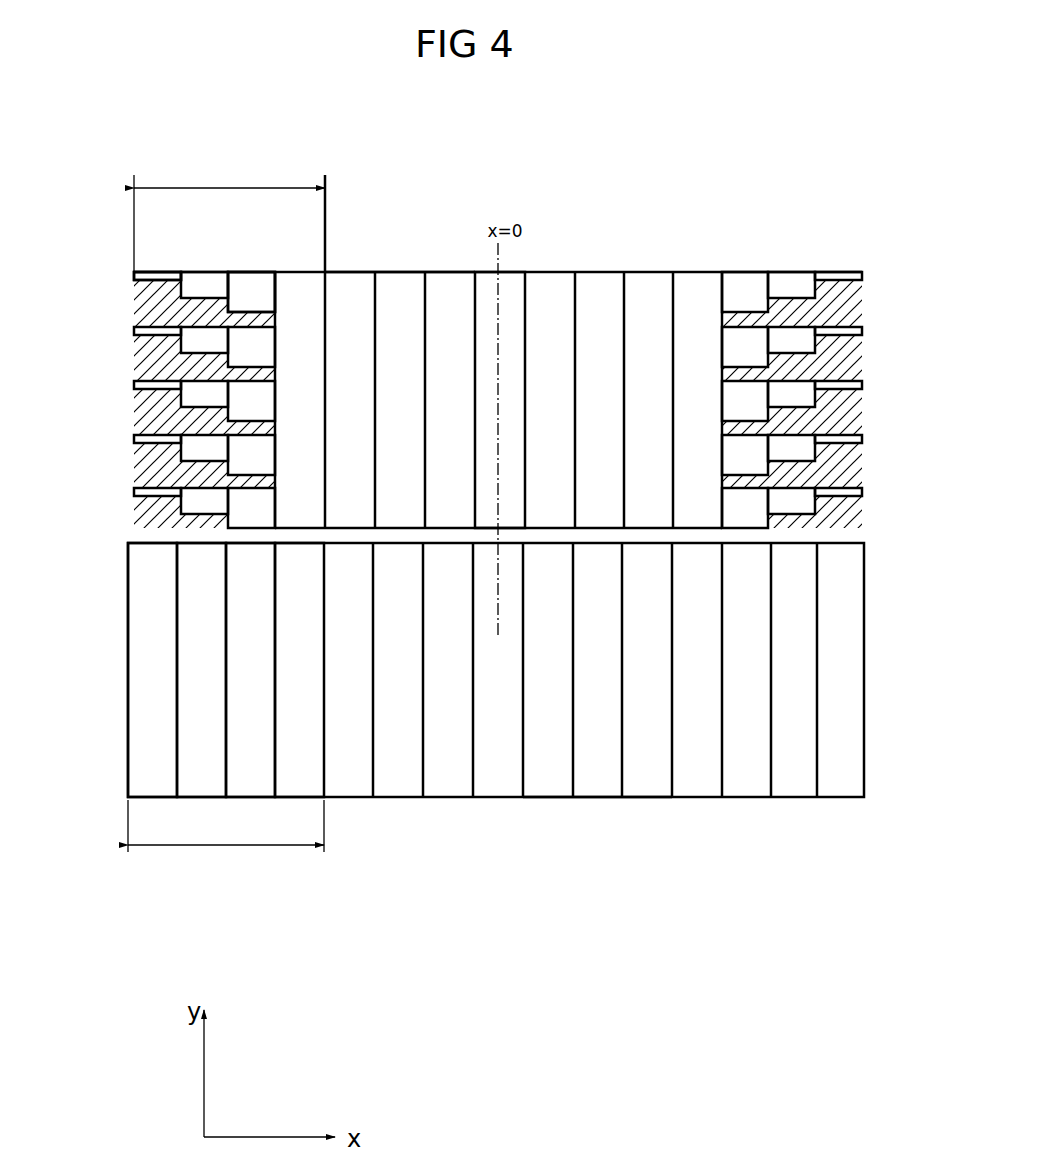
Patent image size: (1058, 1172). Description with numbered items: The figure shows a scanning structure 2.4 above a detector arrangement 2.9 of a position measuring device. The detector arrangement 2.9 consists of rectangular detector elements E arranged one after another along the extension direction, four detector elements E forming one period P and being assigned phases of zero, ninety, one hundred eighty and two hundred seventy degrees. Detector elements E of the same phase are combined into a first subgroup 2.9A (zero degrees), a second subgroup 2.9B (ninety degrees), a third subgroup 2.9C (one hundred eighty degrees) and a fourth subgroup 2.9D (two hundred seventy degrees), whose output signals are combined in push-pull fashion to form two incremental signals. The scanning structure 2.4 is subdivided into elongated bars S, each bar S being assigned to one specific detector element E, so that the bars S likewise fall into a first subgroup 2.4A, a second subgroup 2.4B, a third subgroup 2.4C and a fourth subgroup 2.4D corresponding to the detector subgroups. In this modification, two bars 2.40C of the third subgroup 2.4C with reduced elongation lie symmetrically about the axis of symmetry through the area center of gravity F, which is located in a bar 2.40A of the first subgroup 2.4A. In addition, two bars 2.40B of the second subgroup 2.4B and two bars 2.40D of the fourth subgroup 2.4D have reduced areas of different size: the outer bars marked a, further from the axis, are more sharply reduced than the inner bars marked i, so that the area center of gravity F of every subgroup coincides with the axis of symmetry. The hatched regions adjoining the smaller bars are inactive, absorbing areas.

The scanning structure 2.4 is at (487, 346).
The first subgroup of bars 2.4A is at (487, 265).
The second subgroup of bars 2.4B is at (140, 385).
The third subgroup of bars 2.4C is at (202, 449).
The fourth subgroup of bars 2.4D is at (243, 506).
The bar of first subgroup 2.40A is at (512, 290).
The bars of reduced area of second subgroup 2.40B is at (172, 271).
The bars of reduced elongation of third subgroup 2.40C is at (207, 271).
The bars of reduced area of fourth subgroup 2.40D is at (263, 271).
The detector arrangement 2.9 is at (489, 709).
The first subgroup of detector elements 2.9A is at (293, 595).
The second subgroup of detector elements 2.9B is at (145, 641).
The third subgroup of detector elements 2.9C is at (202, 689).
The fourth subgroup of detector elements 2.9D is at (246, 717).
The outer bar indicator a is at (157, 277).
The inner bar indicator i is at (559, 282).
The bar S is at (442, 272).
The area center of gravity F is at (498, 402).
The detector element E is at (638, 797).
The period of detector arrangement P is at (226, 826).